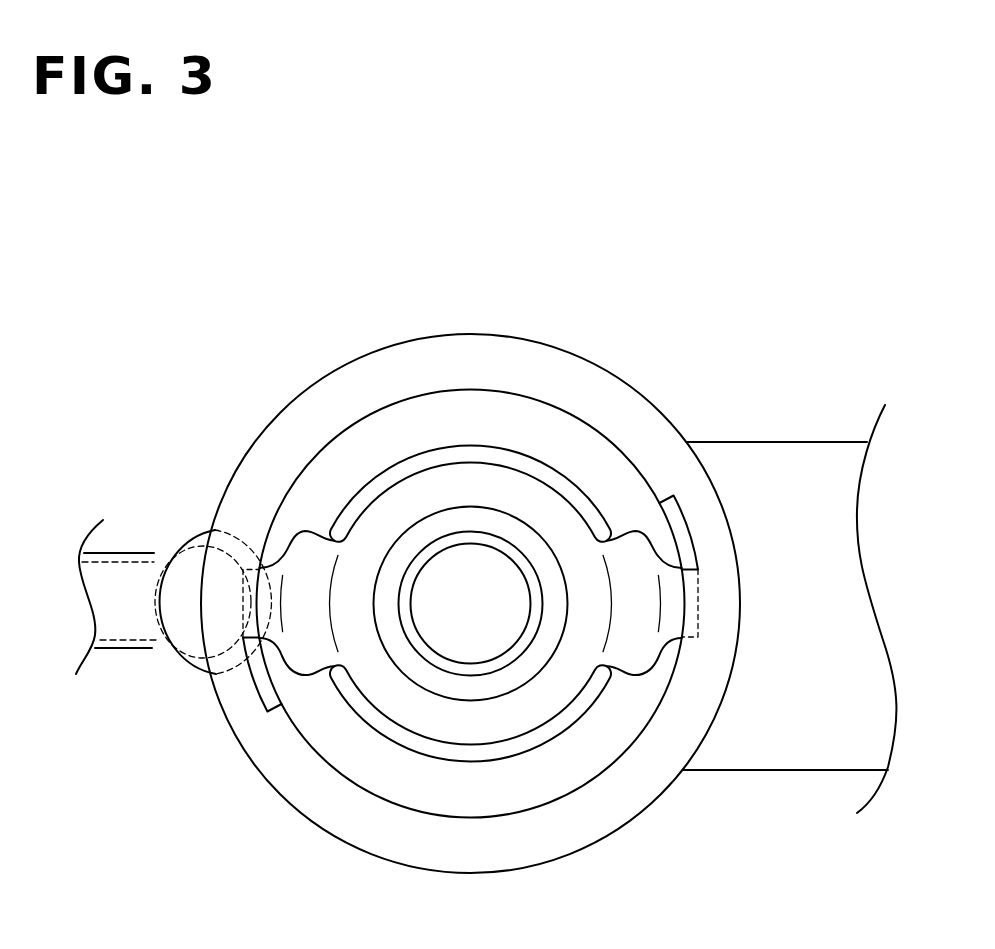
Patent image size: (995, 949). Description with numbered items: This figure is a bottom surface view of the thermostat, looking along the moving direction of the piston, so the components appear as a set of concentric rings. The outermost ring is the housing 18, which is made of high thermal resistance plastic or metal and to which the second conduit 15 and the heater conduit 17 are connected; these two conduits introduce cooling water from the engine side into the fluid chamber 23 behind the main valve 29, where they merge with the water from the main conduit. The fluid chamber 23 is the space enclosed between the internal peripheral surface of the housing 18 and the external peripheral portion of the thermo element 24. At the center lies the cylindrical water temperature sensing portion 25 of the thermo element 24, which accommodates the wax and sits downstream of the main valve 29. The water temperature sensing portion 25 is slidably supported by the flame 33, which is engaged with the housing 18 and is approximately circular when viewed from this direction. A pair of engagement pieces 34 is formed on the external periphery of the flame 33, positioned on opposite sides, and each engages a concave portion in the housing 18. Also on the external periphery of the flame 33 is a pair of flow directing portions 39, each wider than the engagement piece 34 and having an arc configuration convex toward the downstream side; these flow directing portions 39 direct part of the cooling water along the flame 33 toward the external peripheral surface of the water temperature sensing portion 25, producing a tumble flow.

The second conduit 15 is at (121, 634).
The heater conduit 17 is at (186, 642).
The housing 18 is at (517, 348).
The fluid chamber behind the main valve 23 is at (407, 791).
The thermo element 24 is at (468, 677).
The water temperature sensing portion 25 is at (480, 535).
The main valve 29 is at (514, 460).
The flame 33 is at (392, 725).
The engagement piece 34 is at (678, 603).
The flow directing portion 39 is at (303, 547).